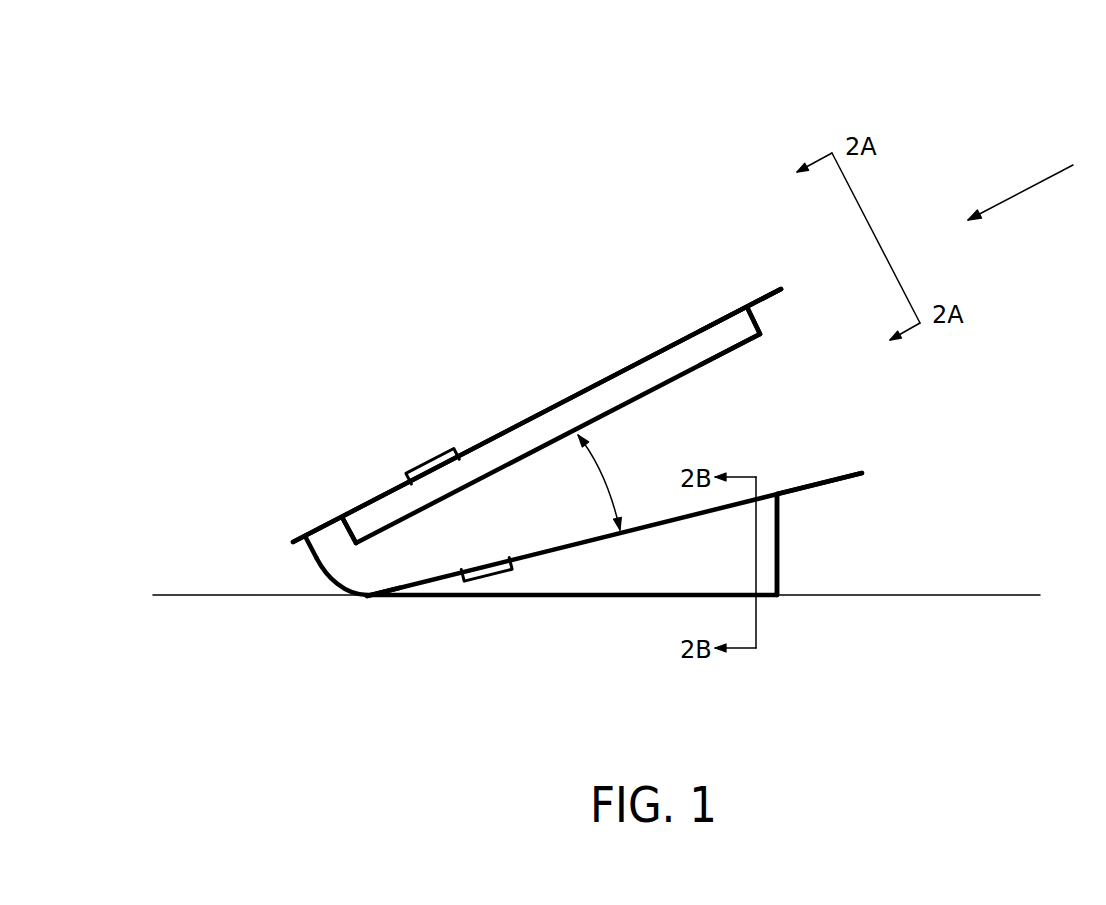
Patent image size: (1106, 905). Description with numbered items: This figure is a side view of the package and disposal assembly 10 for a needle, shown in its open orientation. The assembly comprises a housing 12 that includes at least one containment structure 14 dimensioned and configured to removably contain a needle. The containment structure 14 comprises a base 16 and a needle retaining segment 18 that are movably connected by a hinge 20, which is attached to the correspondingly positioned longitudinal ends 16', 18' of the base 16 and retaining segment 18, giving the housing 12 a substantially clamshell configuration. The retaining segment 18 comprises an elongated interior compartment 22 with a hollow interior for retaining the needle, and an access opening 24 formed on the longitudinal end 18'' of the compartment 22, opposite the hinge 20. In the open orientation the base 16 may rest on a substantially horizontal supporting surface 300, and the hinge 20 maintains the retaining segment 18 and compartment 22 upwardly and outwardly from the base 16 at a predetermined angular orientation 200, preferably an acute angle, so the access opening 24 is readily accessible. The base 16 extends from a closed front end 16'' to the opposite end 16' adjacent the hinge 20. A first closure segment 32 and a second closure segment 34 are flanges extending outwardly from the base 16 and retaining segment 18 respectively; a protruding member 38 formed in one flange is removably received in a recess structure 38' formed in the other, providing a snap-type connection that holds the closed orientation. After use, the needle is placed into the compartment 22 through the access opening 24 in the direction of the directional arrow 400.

The package and disposal assembly 10 is at (517, 264).
The housing 12 is at (353, 468).
The containment structure 14 is at (328, 522).
The base 16 is at (614, 604).
The longitudinal end of the base 16' is at (337, 670).
The closed front end of the base 16'' is at (874, 544).
The needle retaining segment 18 is at (537, 411).
The longitudinal end of the retaining segment 18' is at (243, 562).
The longitudinal end of the compartment 18'' is at (764, 383).
The hinge 20 is at (317, 565).
The interior compartment 22 is at (640, 375).
The access opening 24 is at (753, 318).
The first closure segment 32 is at (863, 472).
The second closure segment 34 is at (760, 297).
The protruding member 38 is at (402, 403).
The recess structure 38' is at (485, 655).
The predetermined angular orientation 200 is at (603, 477).
The horizontal supporting surface 300 is at (995, 593).
The directional arrow 400 is at (1045, 177).